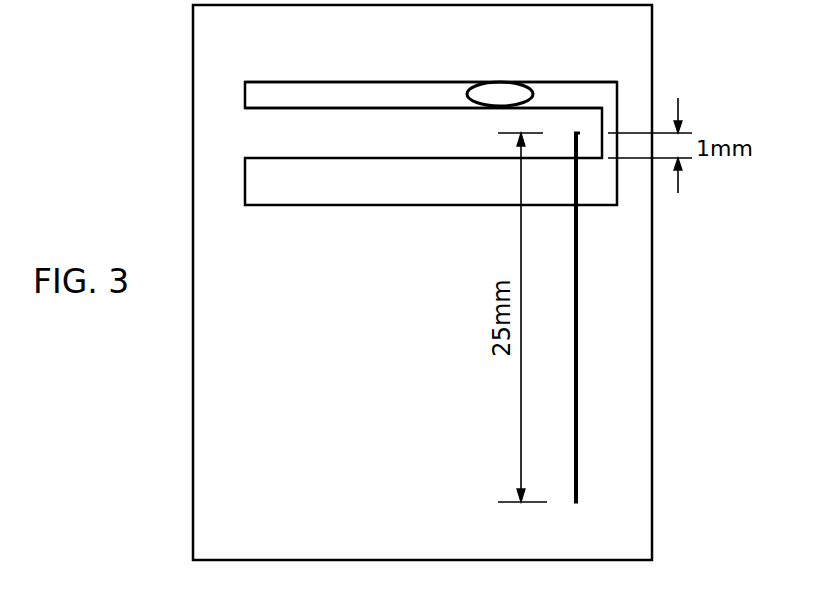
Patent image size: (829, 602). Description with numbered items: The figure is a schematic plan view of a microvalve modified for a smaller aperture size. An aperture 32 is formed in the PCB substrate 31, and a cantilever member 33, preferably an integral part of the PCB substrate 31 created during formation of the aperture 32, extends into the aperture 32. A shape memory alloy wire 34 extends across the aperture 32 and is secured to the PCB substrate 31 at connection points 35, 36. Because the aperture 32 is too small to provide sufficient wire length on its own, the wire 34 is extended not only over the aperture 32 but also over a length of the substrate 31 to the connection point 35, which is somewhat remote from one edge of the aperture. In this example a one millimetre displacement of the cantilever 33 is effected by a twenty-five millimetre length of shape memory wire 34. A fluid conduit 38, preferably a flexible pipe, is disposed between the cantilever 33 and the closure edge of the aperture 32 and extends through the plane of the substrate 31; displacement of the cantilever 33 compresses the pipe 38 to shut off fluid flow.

The PCB substrate 31 is at (355, 427).
The aperture 32 is at (337, 195).
The cantilever member 33 is at (422, 121).
The shape memory alloy wire 34 is at (578, 305).
The connection point 35 is at (577, 502).
The connection point 36 is at (578, 133).
The fluid conduit 38 is at (477, 84).